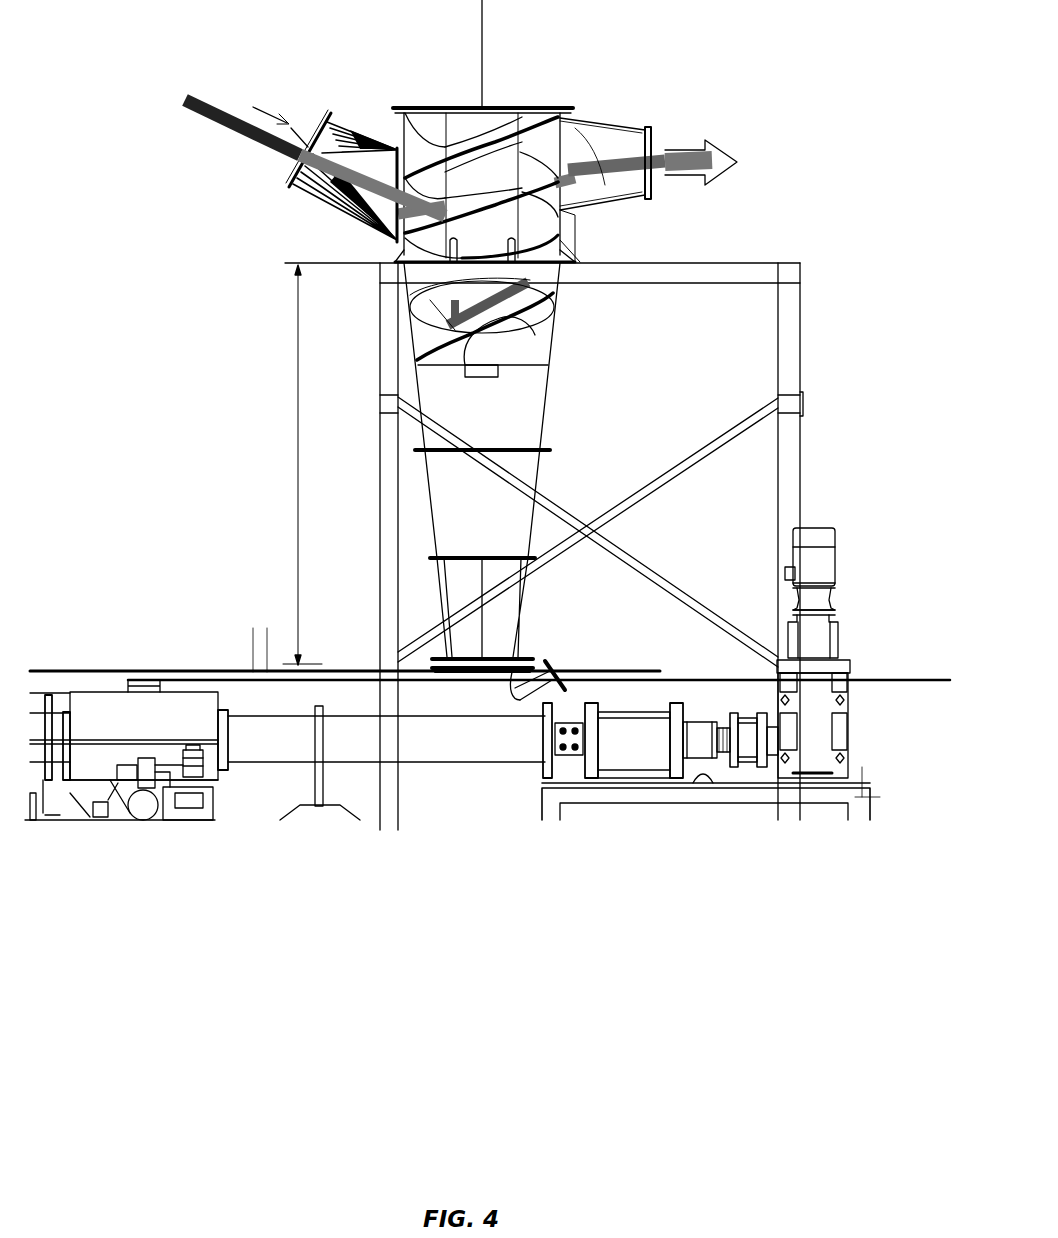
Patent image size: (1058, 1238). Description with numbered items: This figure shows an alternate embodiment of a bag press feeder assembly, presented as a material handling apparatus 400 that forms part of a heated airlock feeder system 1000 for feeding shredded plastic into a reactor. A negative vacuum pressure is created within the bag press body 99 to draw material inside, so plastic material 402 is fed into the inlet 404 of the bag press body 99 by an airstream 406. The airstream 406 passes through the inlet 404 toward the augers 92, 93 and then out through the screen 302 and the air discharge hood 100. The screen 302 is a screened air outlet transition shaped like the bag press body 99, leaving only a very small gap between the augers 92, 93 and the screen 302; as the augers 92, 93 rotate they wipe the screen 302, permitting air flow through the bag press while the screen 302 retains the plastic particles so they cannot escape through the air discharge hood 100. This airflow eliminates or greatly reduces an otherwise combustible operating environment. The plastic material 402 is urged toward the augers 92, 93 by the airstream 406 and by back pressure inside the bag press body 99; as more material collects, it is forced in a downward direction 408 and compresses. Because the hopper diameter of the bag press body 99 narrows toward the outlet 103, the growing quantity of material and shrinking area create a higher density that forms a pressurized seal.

The heated airlock feeder system 1000 is at (233, 490).
The material handling apparatus 400 is at (578, 88).
The auger 93 is at (460, 107).
The auger 92 is at (497, 121).
The air discharge hood 100 is at (598, 143).
The screen 302 is at (555, 210).
The inlet 404 is at (330, 122).
The airstream 406 is at (215, 103).
The plastic material 402 is at (225, 125).
The downward direction 408 is at (525, 330).
The bag press body 99 is at (525, 418).
The outlet 103 is at (503, 648).